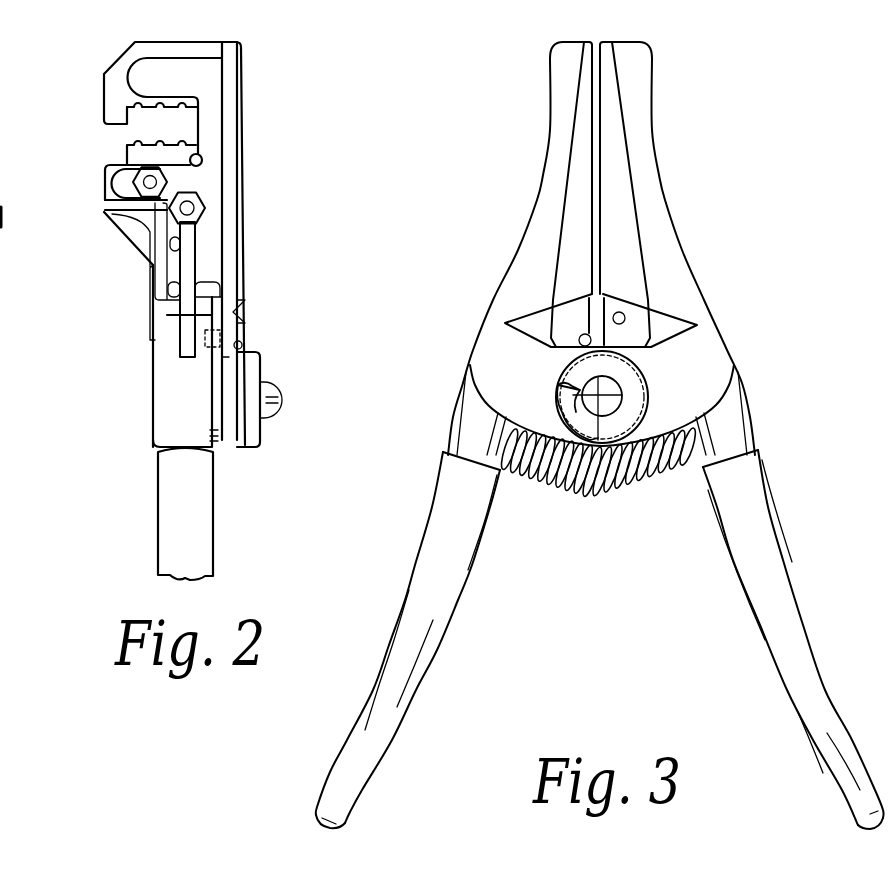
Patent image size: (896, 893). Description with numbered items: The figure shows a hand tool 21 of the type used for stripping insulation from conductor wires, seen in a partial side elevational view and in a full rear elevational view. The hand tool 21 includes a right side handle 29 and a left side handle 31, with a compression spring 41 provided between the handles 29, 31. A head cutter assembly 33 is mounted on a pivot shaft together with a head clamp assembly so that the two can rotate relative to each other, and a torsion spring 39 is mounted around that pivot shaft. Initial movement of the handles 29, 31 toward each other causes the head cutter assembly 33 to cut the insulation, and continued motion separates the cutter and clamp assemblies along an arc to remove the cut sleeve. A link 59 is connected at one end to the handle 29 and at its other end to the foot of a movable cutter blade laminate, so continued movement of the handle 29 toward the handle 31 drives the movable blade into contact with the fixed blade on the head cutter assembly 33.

In FIG. 2, the hand tool 21 is at (251, 146).
In FIG. 3, the hand tool 21 is at (513, 247).
In FIG. 2, the handle 29 is at (195, 423).
In FIG. 3, the handle 29 is at (747, 506).
In FIG. 3, the handle 31 is at (443, 526).
In FIG. 2, the head cutter assembly 33 is at (122, 103).
In FIG. 3, the torsion spring 39 is at (560, 407).
In FIG. 3, the compression spring 41 is at (613, 503).
In FIG. 2, the link 59 is at (187, 280).